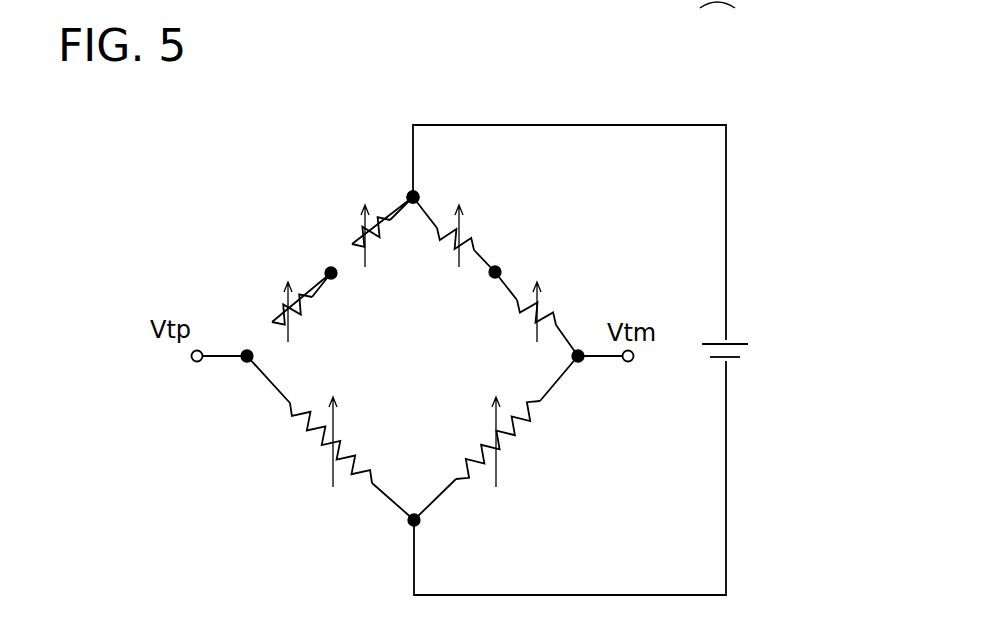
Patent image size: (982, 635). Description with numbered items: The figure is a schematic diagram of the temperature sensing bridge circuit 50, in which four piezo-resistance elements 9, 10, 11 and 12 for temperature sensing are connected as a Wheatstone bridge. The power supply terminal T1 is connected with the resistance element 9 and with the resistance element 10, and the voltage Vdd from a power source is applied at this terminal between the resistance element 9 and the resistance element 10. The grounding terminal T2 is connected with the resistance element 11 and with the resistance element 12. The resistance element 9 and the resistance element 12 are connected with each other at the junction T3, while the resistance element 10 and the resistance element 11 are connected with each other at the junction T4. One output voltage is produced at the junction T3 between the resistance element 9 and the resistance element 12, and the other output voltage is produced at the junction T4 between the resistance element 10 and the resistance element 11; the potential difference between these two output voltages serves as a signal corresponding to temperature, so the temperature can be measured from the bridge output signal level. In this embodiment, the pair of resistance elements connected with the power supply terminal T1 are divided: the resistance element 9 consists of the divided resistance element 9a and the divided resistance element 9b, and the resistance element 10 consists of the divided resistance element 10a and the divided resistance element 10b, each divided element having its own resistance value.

The temperature sensing bridge circuit 50 is at (259, 127).
The piezo-resistance element 9 is at (143, 173).
The divided resistance element 9a is at (357, 233).
The divided resistance element 9b is at (283, 312).
The piezo-resistance element 10 is at (667, 170).
The divided resistance element 10a is at (467, 237).
The divided resistance element 10b is at (546, 302).
The piezo-resistance element 11 is at (513, 432).
The piezo-resistance element 12 is at (322, 435).
The power supply terminal T1 is at (405, 192).
The grounding terminal T2 is at (409, 521).
The junction T3 is at (243, 352).
The junction T4 is at (582, 360).
The voltage Vdd is at (418, 195).